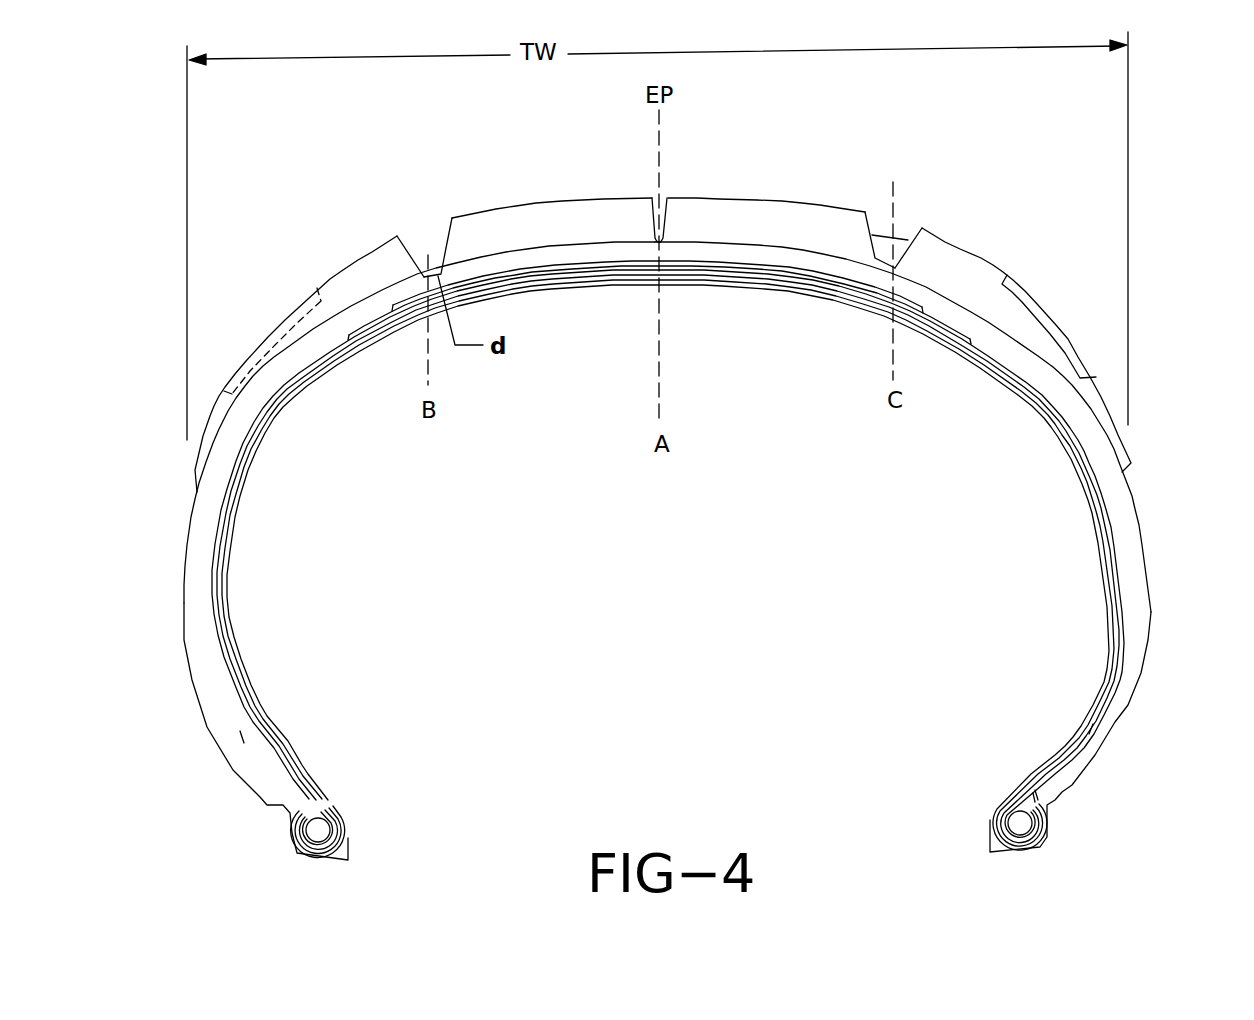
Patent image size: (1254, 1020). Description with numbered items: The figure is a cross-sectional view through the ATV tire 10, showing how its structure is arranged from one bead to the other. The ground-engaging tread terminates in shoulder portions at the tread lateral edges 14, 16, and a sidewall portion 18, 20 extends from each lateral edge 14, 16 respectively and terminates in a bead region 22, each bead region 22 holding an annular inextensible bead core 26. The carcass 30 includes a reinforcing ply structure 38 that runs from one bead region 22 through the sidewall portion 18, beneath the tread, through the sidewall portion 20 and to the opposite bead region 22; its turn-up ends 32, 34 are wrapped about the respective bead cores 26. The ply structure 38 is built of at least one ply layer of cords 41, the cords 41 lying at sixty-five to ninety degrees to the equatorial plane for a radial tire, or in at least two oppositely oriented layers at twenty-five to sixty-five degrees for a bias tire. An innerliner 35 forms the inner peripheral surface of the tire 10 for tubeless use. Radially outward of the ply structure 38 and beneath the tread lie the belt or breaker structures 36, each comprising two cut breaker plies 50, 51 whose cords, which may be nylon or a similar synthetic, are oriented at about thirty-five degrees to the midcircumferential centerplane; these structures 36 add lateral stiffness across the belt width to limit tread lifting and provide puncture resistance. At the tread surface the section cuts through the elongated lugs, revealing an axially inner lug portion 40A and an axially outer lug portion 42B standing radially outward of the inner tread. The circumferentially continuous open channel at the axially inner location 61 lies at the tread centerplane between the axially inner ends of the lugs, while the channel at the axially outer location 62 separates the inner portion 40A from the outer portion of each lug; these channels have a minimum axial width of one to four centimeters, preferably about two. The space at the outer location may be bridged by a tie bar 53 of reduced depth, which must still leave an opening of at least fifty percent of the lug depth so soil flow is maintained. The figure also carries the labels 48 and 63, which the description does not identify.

The tire 10 is at (639, 551).
The lateral edge 14 is at (186, 225).
The lateral edge 16 is at (1129, 200).
The sidewall portion 18 is at (1136, 672).
The sidewall portion 20 is at (197, 680).
The bead region 22 is at (984, 754).
The bead core 26 is at (319, 826).
The carcass 30 is at (659, 331).
The turn-up end 32 is at (1092, 727).
The turn-up end 34 is at (240, 737).
The innerliner 35 is at (1093, 670).
The belt or breaker structure 36 is at (619, 273).
The reinforcing ply structure 38 is at (1118, 616).
The cords 41 is at (668, 566).
The axially inner portion 40A is at (547, 202).
The axially outer portion 42B is at (368, 250).
The bead apex 48 is at (1033, 795).
The breaker ply 50 is at (730, 263).
The breaker ply 51 is at (856, 300).
The tie bar 53 is at (414, 255).
The axially inner location 61 is at (653, 205).
The axially outer location 62 is at (428, 245).
The shoulder circumferential groove 63 is at (882, 226).